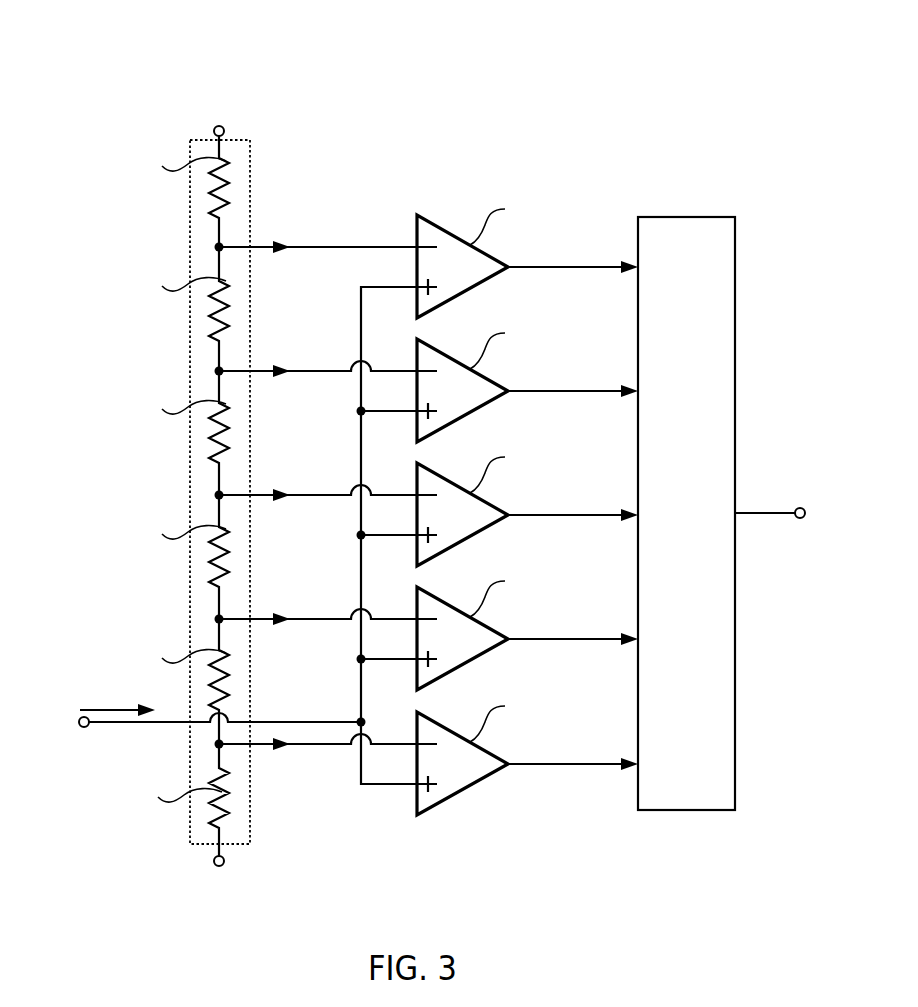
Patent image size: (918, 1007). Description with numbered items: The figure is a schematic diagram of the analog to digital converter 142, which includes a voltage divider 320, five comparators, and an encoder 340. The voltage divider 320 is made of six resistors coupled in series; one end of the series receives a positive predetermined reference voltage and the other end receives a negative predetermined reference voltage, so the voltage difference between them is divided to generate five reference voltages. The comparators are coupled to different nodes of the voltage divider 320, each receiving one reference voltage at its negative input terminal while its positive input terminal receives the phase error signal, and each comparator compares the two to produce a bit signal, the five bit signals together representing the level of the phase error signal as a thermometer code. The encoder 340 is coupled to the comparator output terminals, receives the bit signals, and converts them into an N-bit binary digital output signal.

The analog to digital converter 142 is at (103, 86).
The voltage divider 320 is at (250, 190).
The encoder 340 is at (705, 526).